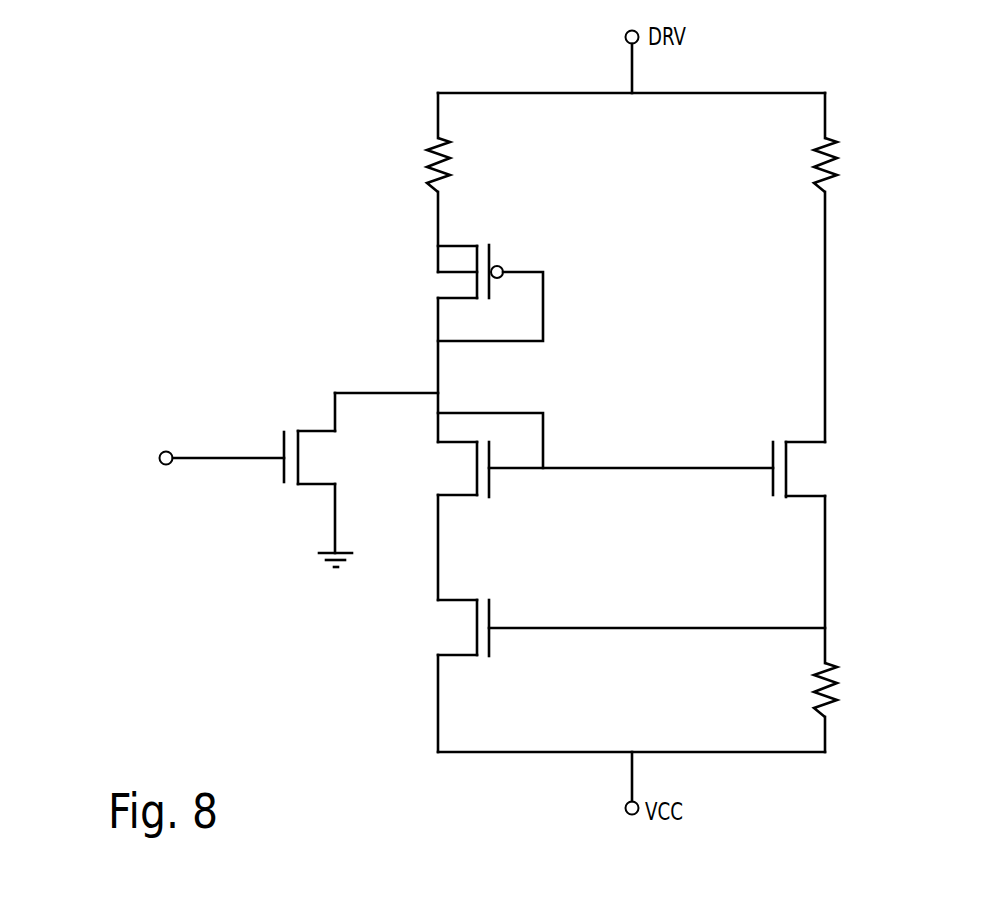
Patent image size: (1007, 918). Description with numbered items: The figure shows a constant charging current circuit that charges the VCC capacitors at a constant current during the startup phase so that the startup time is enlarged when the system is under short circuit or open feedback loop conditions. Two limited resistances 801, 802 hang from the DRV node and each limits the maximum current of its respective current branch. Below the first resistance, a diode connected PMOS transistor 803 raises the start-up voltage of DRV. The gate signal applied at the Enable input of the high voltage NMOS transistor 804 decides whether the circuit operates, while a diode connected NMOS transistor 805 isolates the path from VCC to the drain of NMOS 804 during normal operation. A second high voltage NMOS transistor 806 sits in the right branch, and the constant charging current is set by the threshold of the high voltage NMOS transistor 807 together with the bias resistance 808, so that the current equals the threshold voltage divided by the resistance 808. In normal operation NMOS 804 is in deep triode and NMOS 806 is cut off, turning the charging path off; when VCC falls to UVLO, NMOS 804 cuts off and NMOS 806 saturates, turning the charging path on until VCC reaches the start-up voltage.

The limited resistance 801 is at (429, 176).
The limited resistance 802 is at (830, 183).
The diode connected PMOS transistor 803 is at (477, 284).
The high voltage NMOS transistor 804 is at (317, 486).
The diode connected NMOS transistor 805 is at (492, 484).
The high voltage NMOS transistor 806 is at (787, 456).
The high voltage NMOS transistor 807 is at (492, 642).
The bias resistance 808 is at (830, 710).